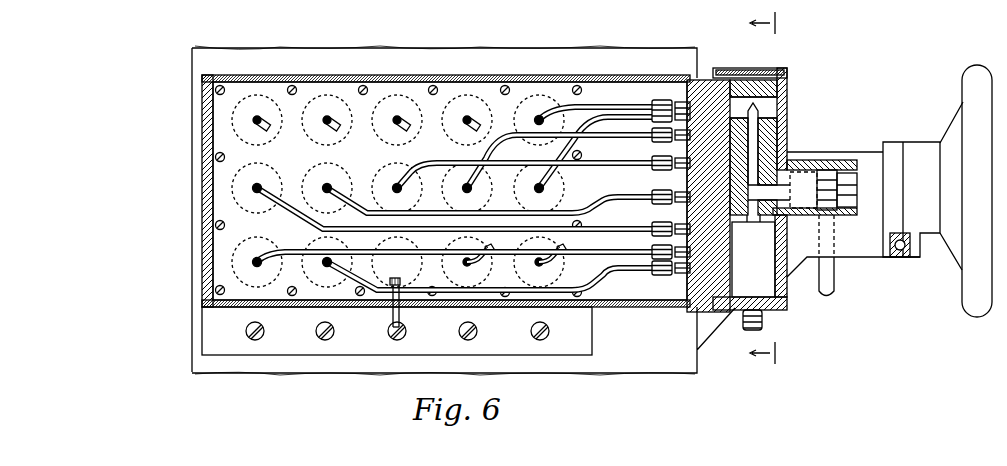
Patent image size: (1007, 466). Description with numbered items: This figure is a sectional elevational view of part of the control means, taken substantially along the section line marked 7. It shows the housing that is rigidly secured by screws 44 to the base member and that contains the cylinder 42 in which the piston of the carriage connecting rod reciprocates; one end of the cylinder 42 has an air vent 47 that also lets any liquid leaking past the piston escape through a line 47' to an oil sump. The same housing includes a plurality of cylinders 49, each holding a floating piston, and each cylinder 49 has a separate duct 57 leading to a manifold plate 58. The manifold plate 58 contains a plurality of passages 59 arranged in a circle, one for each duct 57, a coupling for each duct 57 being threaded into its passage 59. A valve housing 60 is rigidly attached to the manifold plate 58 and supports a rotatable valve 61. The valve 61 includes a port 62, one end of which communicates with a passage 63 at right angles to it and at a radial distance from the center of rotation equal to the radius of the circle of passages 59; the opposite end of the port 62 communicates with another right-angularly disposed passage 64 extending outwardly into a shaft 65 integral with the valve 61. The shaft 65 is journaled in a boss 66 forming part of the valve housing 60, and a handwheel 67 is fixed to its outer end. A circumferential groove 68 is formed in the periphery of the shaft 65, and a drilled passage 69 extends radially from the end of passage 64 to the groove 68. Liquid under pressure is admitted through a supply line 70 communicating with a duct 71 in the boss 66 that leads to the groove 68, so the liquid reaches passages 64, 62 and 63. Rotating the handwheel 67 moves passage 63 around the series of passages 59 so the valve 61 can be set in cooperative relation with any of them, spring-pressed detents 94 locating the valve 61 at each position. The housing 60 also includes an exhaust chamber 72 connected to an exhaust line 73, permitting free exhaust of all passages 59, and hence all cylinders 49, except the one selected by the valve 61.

The section line 7- 7 is at (775, 190).
The cylinder 42 is at (385, 276).
The screws 44 is at (531, 331).
The air vent 47 is at (417, 276).
The line 47' is at (418, 307).
The cylinders 49 is at (396, 96).
The duct 57 is at (405, 128).
The manifold plate 58 is at (702, 82).
The passages 59 is at (690, 93).
The valve housing 60 is at (788, 80).
The rotatable valve 61 is at (780, 138).
The port 62 is at (777, 153).
The passage 63 is at (770, 113).
The passage 64 is at (770, 222).
The shaft 65 is at (812, 215).
The boss 66 is at (850, 258).
The handwheel 67 is at (961, 303).
The circumferential groove 68 is at (827, 168).
The drilled passage 69 is at (850, 206).
The supply line 70 is at (832, 289).
The duct 71 is at (835, 237).
The exhaust chamber 72 is at (770, 288).
The exhaust line 73 is at (765, 325).
The spring-pressed detents 94 is at (904, 262).